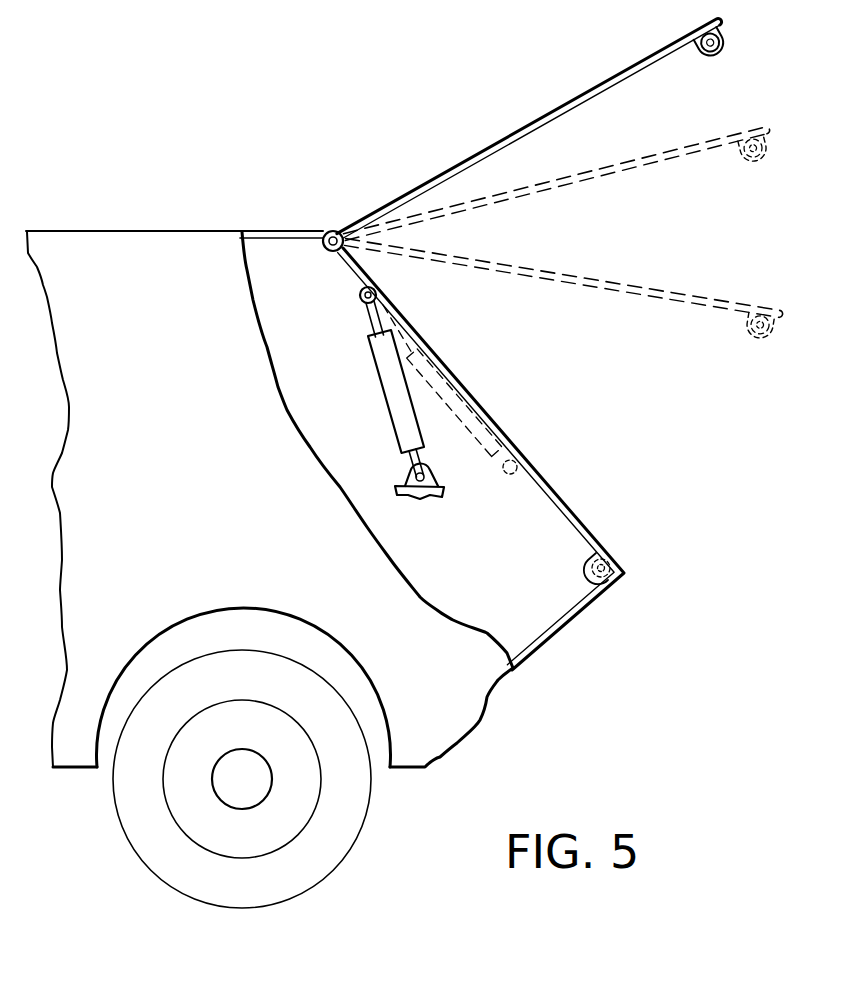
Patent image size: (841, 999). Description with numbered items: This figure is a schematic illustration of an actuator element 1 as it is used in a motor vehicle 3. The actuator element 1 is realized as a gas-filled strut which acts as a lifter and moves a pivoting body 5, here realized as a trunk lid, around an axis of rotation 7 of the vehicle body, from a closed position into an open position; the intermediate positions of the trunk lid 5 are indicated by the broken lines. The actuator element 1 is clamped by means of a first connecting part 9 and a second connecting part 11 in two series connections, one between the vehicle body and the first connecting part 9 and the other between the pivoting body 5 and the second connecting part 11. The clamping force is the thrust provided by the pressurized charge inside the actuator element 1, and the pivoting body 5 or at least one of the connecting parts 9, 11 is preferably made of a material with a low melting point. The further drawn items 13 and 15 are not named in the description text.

The actuator element 1 is at (369, 398).
The motor vehicle 3 is at (102, 251).
The pivoting body 5 is at (564, 498).
The axis of rotation 7 is at (334, 231).
The first connecting part 9 is at (359, 295).
The second connecting part 11 is at (412, 474).
The retracted actuator position 13 is at (371, 319).
The hydraulic cylinder 15 is at (376, 370).